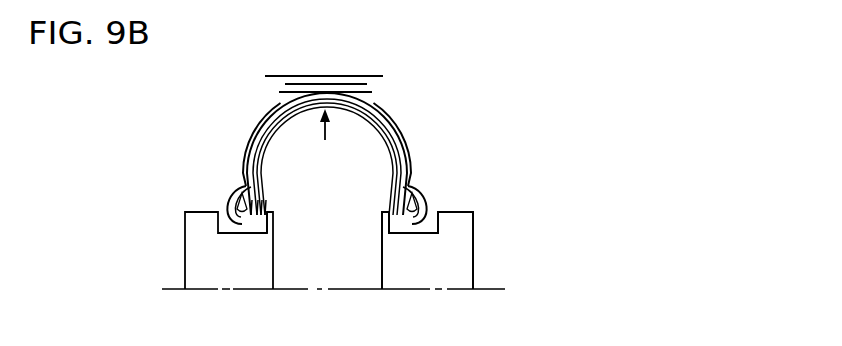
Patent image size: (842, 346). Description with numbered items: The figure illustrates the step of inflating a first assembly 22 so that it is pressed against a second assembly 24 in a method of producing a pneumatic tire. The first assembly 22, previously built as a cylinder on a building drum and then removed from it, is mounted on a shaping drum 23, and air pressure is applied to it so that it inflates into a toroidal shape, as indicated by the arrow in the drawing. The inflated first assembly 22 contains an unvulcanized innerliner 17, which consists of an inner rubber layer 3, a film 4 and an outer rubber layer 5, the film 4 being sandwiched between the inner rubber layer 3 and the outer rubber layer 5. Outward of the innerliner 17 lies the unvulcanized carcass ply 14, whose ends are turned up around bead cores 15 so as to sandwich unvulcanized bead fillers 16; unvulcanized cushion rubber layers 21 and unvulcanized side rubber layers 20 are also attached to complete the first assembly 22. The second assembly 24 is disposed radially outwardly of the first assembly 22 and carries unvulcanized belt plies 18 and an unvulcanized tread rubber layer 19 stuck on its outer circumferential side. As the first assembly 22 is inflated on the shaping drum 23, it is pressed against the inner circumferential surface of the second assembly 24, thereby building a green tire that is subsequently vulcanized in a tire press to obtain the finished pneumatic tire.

The inner rubber layer 3 is at (383, 205).
The film 4 is at (392, 176).
The outer rubber layer 5 is at (276, 135).
The carcass ply 14 is at (372, 127).
The bead core 15 is at (268, 210).
The bead filler 16 is at (238, 200).
The innerliner 17 is at (275, 119).
The belt plies 18 is at (362, 84).
The tread rubber layer 19 is at (302, 76).
The side rubber layer 20 is at (397, 134).
The cushion rubber layer 21 is at (437, 203).
The first assembly 22 is at (252, 136).
The shaping drum 23 is at (462, 243).
The second assembly 24 is at (388, 72).